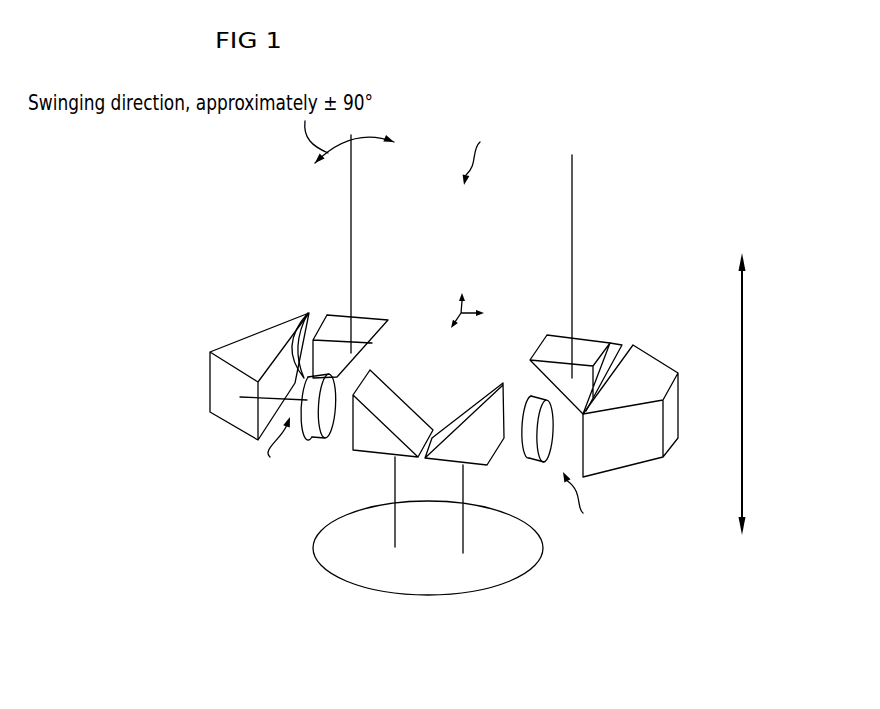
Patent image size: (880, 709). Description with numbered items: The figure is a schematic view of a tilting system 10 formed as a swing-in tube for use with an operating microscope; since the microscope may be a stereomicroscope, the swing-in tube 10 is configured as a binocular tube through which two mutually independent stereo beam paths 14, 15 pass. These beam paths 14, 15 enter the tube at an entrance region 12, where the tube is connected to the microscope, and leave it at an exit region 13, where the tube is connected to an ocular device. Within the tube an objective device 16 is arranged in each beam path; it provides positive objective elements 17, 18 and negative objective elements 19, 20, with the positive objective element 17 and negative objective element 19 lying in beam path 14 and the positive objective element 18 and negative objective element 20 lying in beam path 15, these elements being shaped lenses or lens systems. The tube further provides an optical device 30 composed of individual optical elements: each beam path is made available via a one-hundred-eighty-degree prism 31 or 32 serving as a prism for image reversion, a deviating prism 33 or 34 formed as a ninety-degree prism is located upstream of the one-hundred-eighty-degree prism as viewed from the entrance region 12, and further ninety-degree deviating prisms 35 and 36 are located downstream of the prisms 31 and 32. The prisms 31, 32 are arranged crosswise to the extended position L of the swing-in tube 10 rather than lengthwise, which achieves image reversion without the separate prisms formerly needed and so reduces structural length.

The tilting system 10 is at (443, 100).
The entrance region 12 is at (430, 577).
The exit region 13 is at (477, 152).
The beam path 14 is at (353, 245).
The beam path 15 is at (574, 247).
The objective device 16 is at (432, 474).
The positive objective element 17 is at (312, 437).
The positive objective element 18 is at (532, 461).
The negative objective element 19 is at (318, 321).
The negative objective element 20 is at (615, 355).
The optical device 30 is at (673, 339).
The 180° prism 31 is at (250, 330).
The 180° prism 32 is at (670, 415).
The deviating prism 33 is at (390, 397).
The deviating prism 34 is at (463, 413).
The deviating prism 35 is at (375, 317).
The deviating prism 36 is at (583, 342).
The extended position L is at (743, 393).